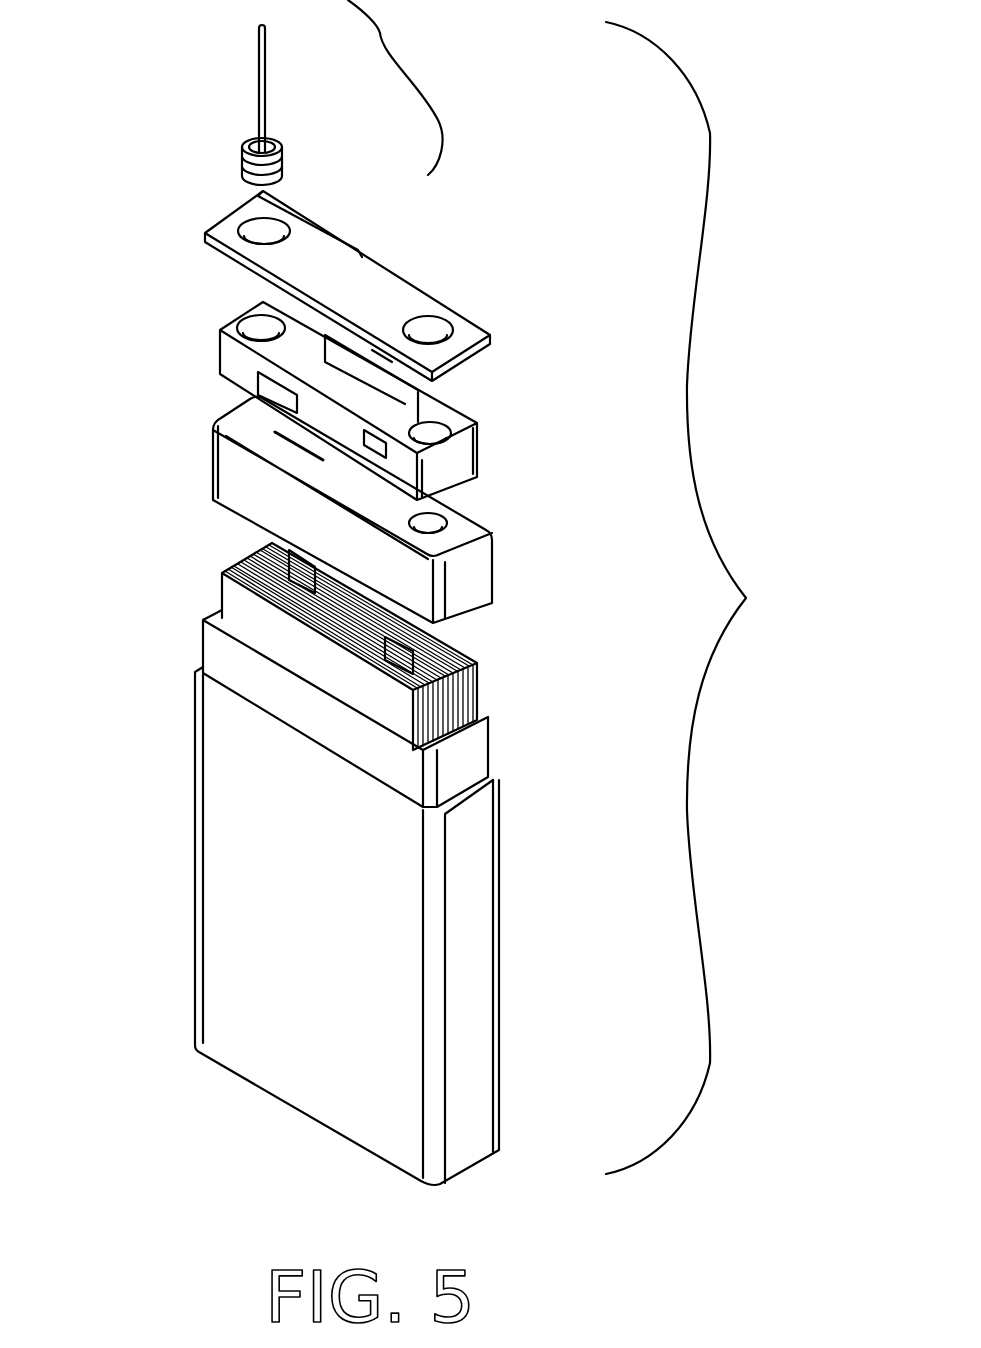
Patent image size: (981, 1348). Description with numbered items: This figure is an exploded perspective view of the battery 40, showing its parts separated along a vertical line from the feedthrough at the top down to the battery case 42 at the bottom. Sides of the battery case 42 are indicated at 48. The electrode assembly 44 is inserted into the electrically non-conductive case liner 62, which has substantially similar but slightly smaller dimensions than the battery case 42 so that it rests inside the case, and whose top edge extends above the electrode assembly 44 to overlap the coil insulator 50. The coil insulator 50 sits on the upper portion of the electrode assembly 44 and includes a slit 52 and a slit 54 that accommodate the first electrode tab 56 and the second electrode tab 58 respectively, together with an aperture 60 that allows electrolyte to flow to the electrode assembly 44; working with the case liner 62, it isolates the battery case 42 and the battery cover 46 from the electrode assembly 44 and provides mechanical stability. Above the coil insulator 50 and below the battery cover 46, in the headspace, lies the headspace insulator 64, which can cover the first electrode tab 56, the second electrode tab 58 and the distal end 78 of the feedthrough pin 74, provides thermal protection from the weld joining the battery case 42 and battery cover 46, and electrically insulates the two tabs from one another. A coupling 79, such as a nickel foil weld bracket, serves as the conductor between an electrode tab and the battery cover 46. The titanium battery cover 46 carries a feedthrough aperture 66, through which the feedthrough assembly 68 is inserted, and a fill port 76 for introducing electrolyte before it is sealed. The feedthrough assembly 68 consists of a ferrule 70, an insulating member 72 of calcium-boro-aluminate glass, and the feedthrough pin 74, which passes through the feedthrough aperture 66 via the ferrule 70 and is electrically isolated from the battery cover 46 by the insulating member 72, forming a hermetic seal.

The battery 40 is at (700, 598).
The battery case 42 is at (375, 926).
The electrode assembly 44 is at (373, 640).
The battery cover 46 is at (337, 285).
The case side walls 48 is at (225, 940).
The coil insulator 50 is at (371, 494).
The slit 52 is at (267, 550).
The slit 54 is at (437, 530).
The first electrode tab 56 is at (212, 463).
The second electrode tab 58 is at (400, 663).
The aperture 60 is at (370, 399).
The case liner 62 is at (470, 770).
The headspace insulator 64 is at (238, 370).
The feedthrough aperture 66 is at (236, 215).
The feedthrough assembly 68 is at (395, 87).
The ferrule 70 is at (287, 162).
The insulating member 72 is at (273, 137).
The feedthrough pin 74 is at (265, 75).
The fill port 76 is at (435, 328).
The distal end 78 is at (332, 230).
The coupling 79 is at (403, 400).